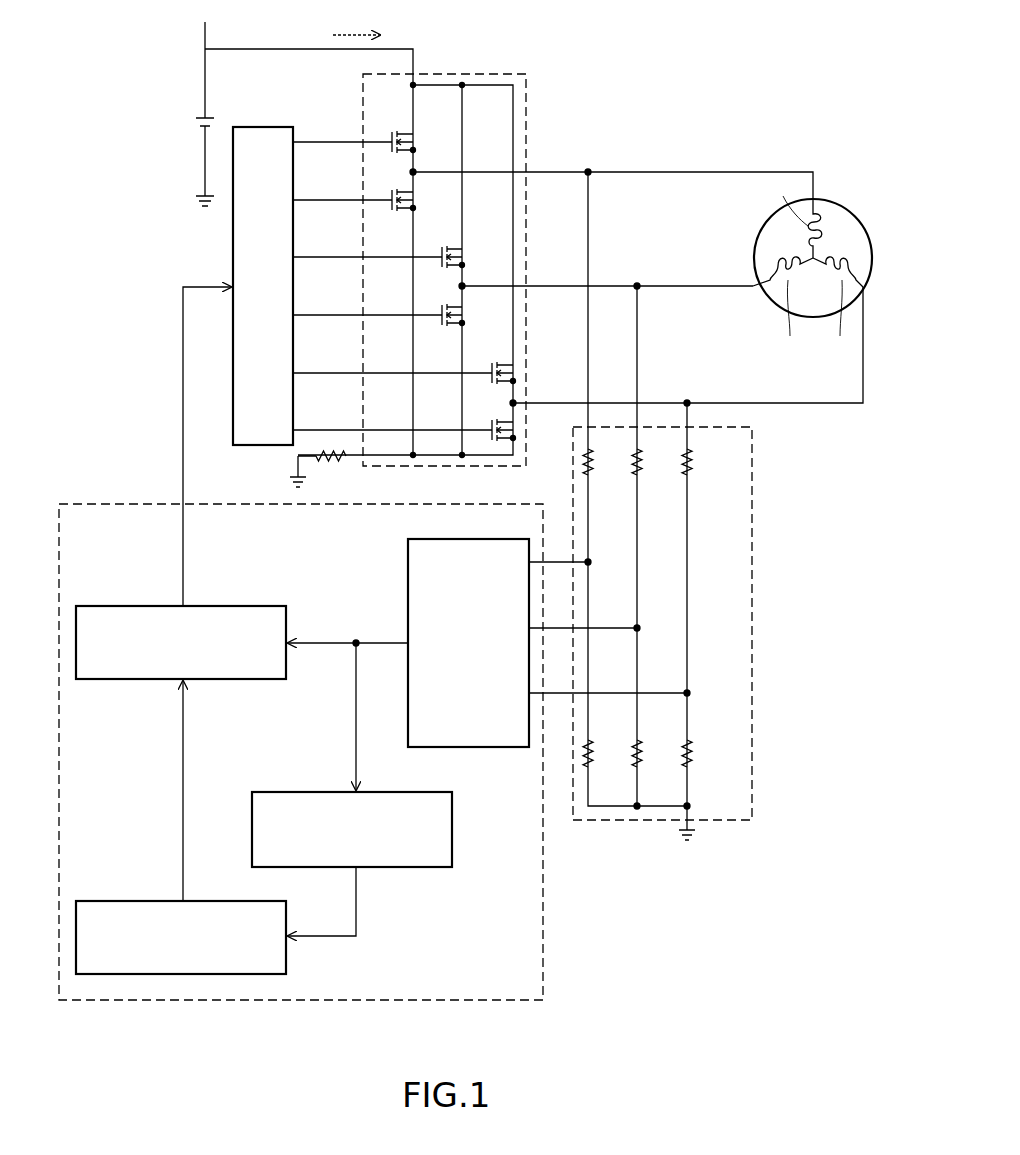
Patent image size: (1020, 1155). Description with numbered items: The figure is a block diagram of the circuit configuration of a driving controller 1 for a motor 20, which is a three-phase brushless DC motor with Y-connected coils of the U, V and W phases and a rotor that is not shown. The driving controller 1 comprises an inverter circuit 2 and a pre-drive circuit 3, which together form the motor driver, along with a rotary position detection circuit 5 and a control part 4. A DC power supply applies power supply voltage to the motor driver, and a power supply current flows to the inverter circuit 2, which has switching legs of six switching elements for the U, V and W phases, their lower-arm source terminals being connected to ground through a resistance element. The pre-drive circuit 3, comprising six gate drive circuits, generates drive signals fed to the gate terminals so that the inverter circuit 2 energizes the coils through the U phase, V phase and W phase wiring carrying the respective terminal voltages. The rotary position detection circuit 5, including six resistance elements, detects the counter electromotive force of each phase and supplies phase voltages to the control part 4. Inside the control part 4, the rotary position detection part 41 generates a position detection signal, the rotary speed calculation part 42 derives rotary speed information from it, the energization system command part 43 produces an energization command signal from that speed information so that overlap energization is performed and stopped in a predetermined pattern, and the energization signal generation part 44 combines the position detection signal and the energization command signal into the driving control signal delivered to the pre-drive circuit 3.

The driving controller 1 is at (584, 79).
The inverter circuit 2 is at (487, 74).
The pre-drive circuit 3 is at (259, 127).
The control part 4 is at (385, 1002).
The rotary position detection circuit 5 is at (752, 546).
The motor 20 is at (832, 203).
The rotary position detection part 41 is at (484, 538).
The rotary speed calculation part 42 is at (382, 792).
The energization system command part 43 is at (204, 901).
The energization signal generation part 44 is at (246, 606).